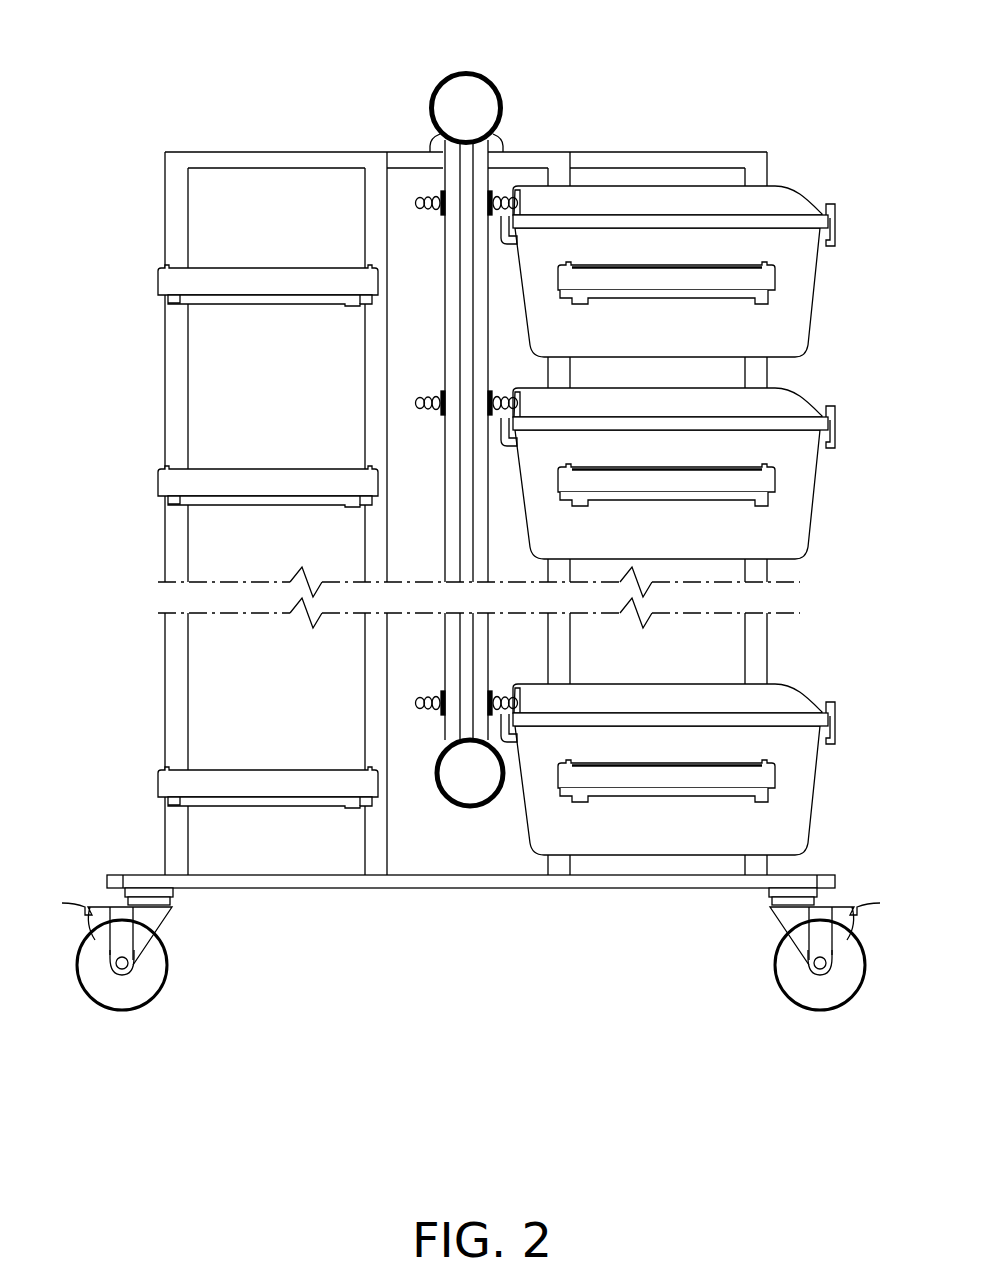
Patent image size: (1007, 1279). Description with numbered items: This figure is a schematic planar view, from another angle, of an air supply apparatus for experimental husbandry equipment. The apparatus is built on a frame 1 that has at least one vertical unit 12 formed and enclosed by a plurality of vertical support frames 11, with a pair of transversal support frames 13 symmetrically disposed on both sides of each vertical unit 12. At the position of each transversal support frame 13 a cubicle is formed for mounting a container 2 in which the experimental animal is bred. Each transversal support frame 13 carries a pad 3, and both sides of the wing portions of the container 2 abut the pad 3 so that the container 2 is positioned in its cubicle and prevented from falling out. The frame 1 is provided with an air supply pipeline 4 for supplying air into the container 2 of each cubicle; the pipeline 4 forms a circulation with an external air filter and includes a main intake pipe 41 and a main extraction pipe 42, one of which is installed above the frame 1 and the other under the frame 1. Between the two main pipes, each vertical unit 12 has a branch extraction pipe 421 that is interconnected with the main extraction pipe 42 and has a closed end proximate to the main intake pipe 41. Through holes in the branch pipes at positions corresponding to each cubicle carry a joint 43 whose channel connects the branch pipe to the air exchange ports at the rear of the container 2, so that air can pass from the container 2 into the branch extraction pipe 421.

The frame 1 is at (150, 395).
The vertical support frames 11 is at (557, 173).
The vertical unit 12 is at (667, 170).
The transversal support frame 13 is at (737, 298).
The container 2 is at (811, 268).
The pad 3 is at (772, 282).
The air supply pipeline 4 is at (465, 437).
The main intake pipe 41 is at (481, 91).
The main extraction pipe 42 is at (475, 797).
The branch extraction pipe 421 is at (485, 180).
The joint 43 is at (492, 214).